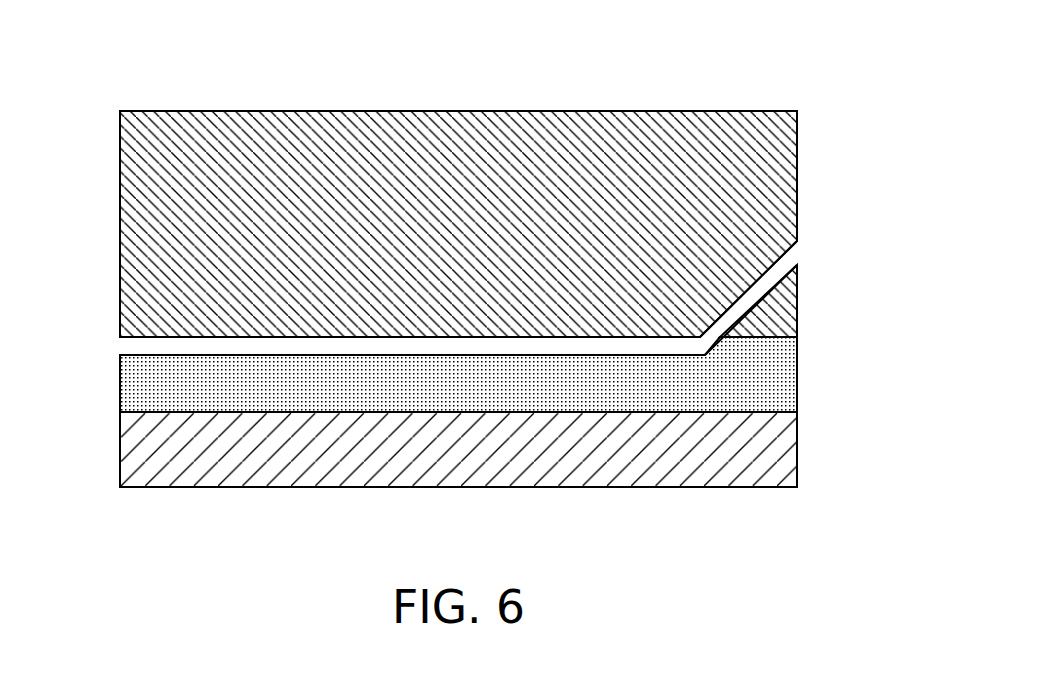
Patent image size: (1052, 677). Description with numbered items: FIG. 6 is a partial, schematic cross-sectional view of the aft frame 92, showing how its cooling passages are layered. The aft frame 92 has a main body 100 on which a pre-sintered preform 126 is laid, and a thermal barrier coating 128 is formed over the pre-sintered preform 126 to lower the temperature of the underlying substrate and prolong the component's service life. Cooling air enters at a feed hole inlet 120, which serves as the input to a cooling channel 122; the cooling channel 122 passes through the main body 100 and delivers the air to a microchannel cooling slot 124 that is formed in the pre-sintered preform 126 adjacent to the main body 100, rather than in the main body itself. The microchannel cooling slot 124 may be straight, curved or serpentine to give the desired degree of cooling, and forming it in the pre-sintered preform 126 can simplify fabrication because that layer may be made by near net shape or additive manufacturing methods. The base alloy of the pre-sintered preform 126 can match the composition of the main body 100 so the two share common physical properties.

The aft frame 92 is at (468, 251).
The main body 100 is at (466, 238).
The feed hole inlet 120 is at (794, 256).
The cooling channel 122 is at (748, 299).
The microchannel cooling slot 124 is at (163, 347).
The pre-sintered preform 126 is at (130, 382).
The thermal barrier coating 128 is at (480, 463).